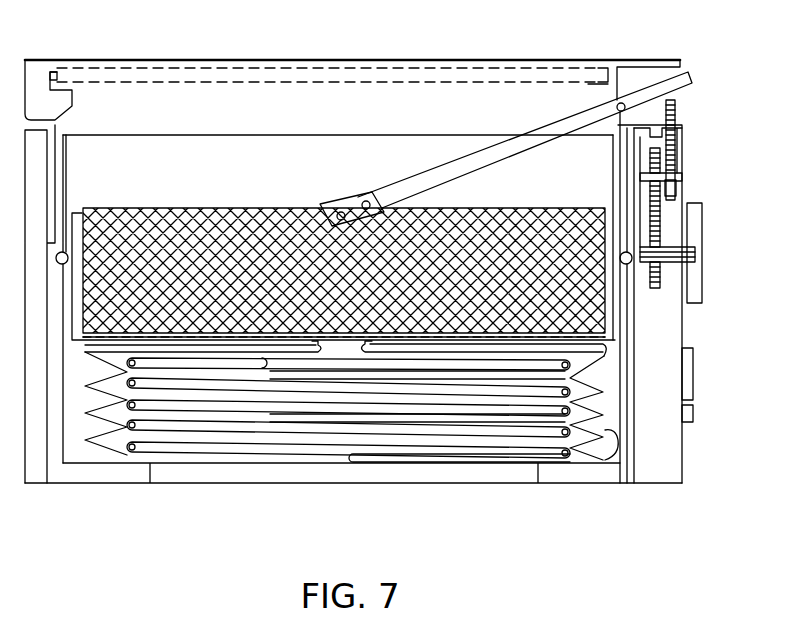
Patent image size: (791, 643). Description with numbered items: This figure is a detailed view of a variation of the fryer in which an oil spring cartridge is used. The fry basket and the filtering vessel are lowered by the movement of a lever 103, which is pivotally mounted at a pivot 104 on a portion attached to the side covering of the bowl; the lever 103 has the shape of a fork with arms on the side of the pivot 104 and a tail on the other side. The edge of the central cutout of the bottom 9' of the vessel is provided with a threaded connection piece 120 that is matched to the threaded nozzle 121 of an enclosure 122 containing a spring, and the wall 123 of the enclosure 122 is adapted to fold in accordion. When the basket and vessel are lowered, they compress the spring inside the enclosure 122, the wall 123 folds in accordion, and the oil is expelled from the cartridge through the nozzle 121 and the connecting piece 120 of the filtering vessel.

The lever 103 is at (487, 132).
The pivot 104 is at (621, 103).
The bottom of the vessel 9' is at (389, 283).
The threaded connection piece 120 is at (385, 347).
The threaded nozzle 121 is at (392, 352).
The enclosure 122 is at (79, 420).
The wall 123 is at (618, 430).